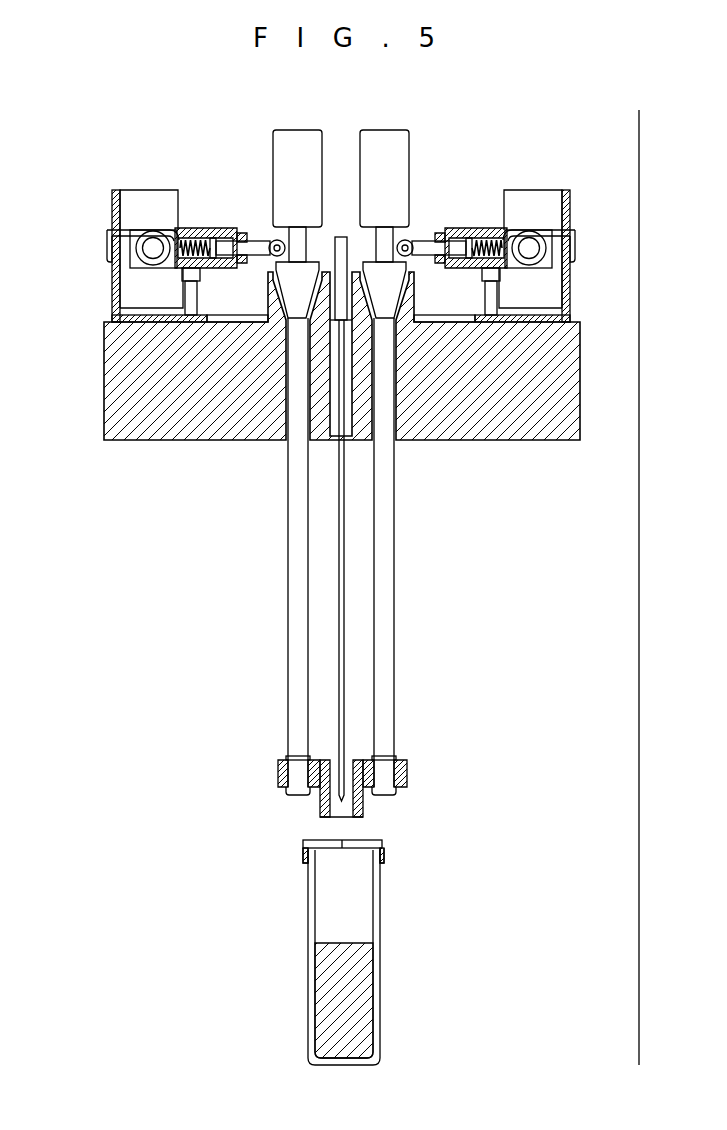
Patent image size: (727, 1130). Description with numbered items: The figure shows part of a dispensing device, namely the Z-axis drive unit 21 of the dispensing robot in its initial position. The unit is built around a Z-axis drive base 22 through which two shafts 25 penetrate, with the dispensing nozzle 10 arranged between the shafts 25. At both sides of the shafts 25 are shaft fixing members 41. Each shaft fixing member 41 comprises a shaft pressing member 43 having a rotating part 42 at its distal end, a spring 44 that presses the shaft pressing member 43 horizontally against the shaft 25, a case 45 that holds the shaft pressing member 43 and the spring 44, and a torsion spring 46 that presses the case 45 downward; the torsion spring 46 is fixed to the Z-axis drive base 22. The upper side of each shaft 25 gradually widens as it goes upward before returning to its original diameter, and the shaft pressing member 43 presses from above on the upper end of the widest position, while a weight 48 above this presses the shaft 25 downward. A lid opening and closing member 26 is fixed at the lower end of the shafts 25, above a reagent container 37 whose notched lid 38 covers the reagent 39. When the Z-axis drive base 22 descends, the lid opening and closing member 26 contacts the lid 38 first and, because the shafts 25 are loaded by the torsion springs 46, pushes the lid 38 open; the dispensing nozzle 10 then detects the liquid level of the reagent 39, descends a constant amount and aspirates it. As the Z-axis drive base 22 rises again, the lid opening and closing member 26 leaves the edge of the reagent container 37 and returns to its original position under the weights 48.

The Z-axis drive unit 21 is at (598, 126).
The Z-axis drive base 22 is at (580, 388).
The shaft 25 is at (288, 613).
The dispensing nozzle 10 is at (344, 693).
The lid opening and closing member 26 is at (362, 808).
The reagent container 37 is at (378, 972).
The lid 38 is at (360, 842).
The reagent 39 is at (360, 1030).
The weight 48 is at (290, 132).
The torsion spring 46 is at (106, 232).
The shaft fixing member 41 is at (380, 224).
The spring 44 is at (190, 228).
The shaft pressing member 43 is at (256, 257).
The rotating part 42 is at (272, 240).
The case 45 is at (204, 268).